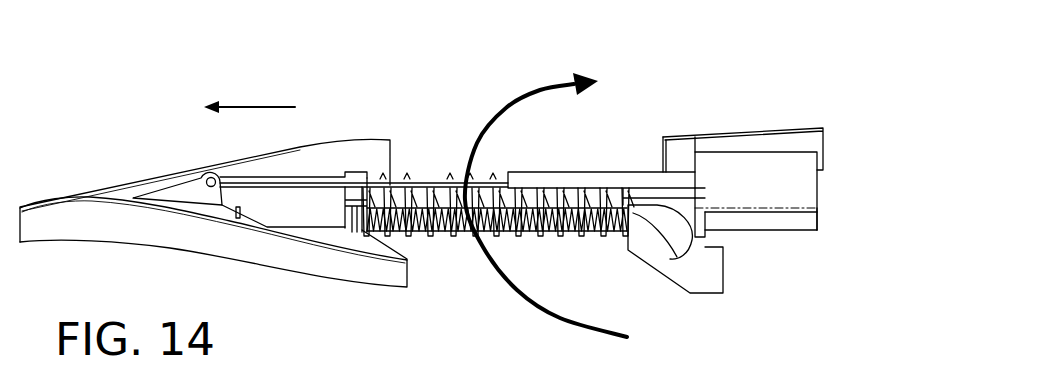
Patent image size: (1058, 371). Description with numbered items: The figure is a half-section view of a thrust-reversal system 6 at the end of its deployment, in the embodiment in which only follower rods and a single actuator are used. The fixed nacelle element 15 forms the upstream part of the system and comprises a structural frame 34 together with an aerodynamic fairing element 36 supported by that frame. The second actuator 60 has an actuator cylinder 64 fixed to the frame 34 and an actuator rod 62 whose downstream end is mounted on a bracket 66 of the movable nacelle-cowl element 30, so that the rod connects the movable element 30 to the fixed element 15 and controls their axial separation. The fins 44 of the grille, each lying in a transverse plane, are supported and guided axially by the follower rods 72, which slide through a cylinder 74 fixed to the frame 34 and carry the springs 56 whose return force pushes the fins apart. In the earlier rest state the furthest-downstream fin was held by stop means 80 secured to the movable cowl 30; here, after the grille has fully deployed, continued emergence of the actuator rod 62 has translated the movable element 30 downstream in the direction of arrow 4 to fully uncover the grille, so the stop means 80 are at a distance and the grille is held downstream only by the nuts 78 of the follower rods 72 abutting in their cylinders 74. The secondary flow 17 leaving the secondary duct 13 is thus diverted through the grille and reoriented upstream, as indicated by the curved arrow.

The direction of movement 4 is at (252, 106).
The thrust-reversal system 6 is at (193, 104).
The secondary duct 13 is at (479, 317).
The fixed nacelle element 15 is at (790, 150).
The secondary flow 17 is at (498, 112).
The movable nacelle-cowl element 30 is at (124, 183).
The structural frame 34 is at (600, 233).
The aerodynamic fairing element 36 is at (758, 128).
The fins 44 is at (428, 187).
The springs 56 is at (379, 186).
The second actuator 60 is at (716, 165).
The actuator rod 62 is at (318, 178).
The actuator cylinder 64 is at (793, 193).
The bracket 66 is at (177, 190).
The follower rods 72 is at (463, 228).
The cylinder 74 is at (770, 222).
The nuts 78 is at (356, 231).
The stop means 80 is at (238, 216).